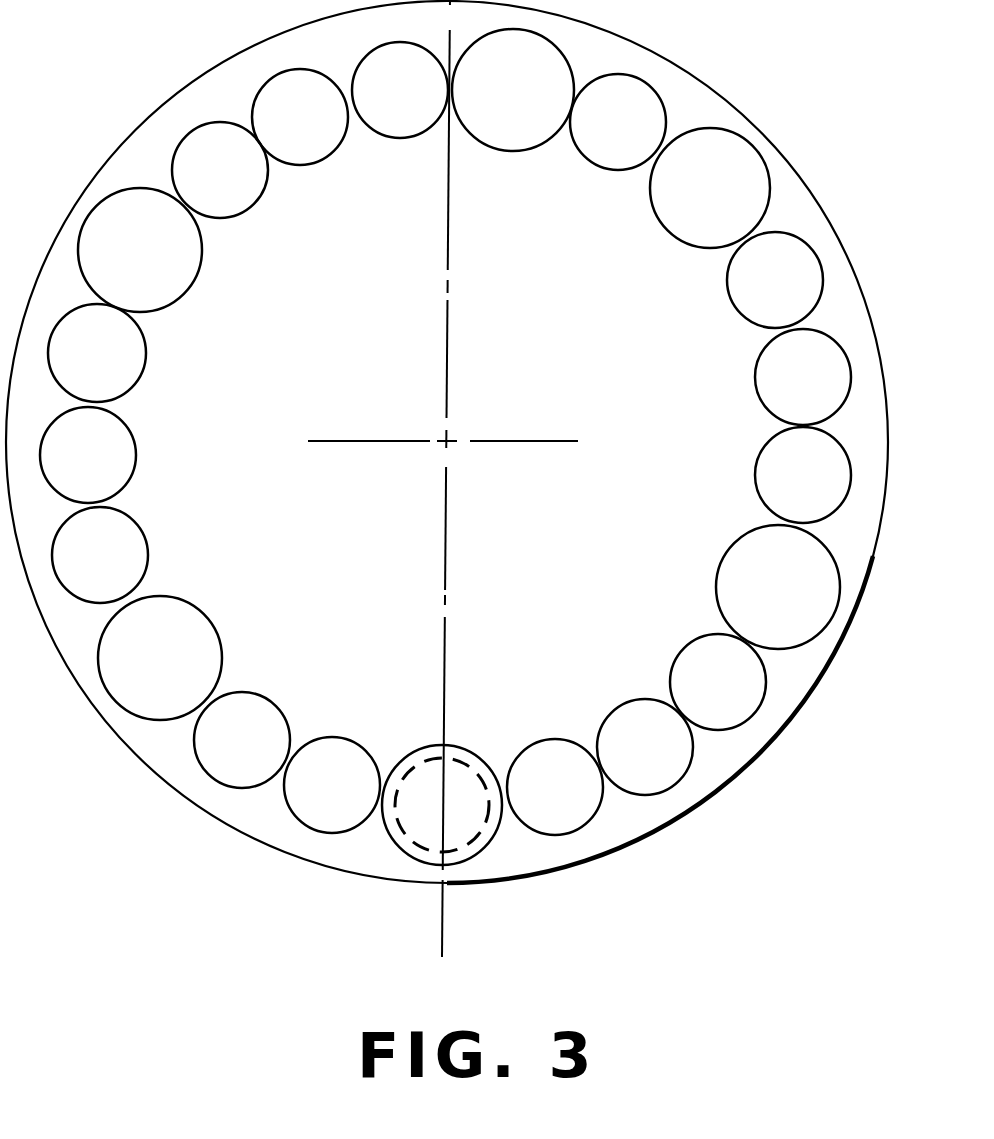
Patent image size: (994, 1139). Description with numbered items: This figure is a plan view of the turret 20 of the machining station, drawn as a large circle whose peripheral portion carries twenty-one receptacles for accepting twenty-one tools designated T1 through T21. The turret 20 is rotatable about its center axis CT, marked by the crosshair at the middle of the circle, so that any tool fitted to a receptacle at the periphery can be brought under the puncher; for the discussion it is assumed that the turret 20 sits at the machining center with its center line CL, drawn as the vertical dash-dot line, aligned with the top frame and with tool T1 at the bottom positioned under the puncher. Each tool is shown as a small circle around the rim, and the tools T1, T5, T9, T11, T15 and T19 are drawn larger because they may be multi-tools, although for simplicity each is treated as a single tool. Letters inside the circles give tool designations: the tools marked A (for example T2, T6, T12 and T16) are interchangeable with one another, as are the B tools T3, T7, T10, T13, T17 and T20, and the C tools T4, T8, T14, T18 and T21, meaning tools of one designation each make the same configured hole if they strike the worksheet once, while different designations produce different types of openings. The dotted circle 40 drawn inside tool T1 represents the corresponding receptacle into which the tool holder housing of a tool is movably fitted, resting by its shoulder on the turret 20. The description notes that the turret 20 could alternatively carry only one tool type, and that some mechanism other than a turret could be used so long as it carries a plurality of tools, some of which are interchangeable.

The turret 20 is at (447, 441).
The receptacle 40 is at (473, 837).
The center axis CT is at (447, 441).
The center line CL is at (445, 647).
The tool T1 is at (442, 780).
The tool T2 is at (549, 769).
The tool T3 is at (626, 734).
The tool T4 is at (691, 676).
The tool T5 is at (747, 587).
The tool T6 is at (770, 475).
The tool T7 is at (772, 377).
The tool T8 is at (748, 280).
The tool T9 is at (694, 198).
The tool T10 is at (612, 140).
The tool T11 is at (513, 105).
The tool T12 is at (400, 107).
The tool T13 is at (309, 135).
The tool T14 is at (236, 184).
The tool T15 is at (176, 250).
The tool T16 is at (134, 353).
The tool T17 is at (123, 455).
The tool T18 is at (136, 555).
The tool T19 is at (203, 658).
The tool T20 is at (267, 724).
The tool T21 is at (339, 768).